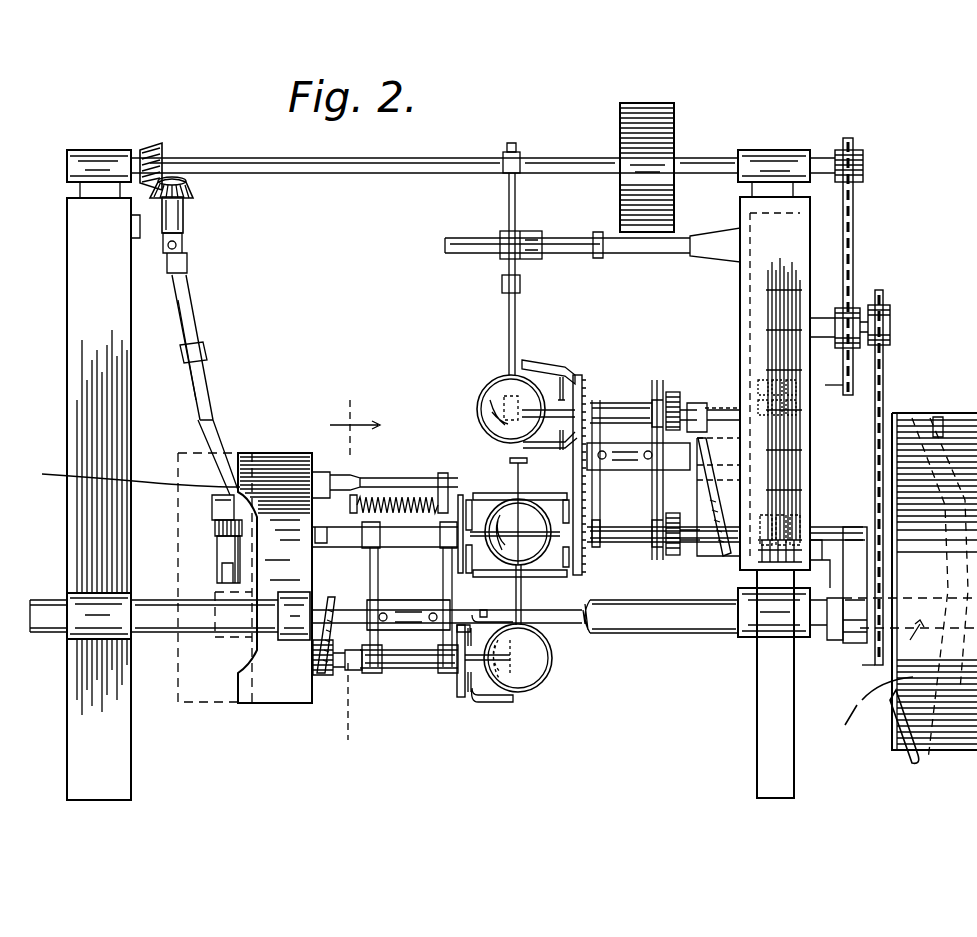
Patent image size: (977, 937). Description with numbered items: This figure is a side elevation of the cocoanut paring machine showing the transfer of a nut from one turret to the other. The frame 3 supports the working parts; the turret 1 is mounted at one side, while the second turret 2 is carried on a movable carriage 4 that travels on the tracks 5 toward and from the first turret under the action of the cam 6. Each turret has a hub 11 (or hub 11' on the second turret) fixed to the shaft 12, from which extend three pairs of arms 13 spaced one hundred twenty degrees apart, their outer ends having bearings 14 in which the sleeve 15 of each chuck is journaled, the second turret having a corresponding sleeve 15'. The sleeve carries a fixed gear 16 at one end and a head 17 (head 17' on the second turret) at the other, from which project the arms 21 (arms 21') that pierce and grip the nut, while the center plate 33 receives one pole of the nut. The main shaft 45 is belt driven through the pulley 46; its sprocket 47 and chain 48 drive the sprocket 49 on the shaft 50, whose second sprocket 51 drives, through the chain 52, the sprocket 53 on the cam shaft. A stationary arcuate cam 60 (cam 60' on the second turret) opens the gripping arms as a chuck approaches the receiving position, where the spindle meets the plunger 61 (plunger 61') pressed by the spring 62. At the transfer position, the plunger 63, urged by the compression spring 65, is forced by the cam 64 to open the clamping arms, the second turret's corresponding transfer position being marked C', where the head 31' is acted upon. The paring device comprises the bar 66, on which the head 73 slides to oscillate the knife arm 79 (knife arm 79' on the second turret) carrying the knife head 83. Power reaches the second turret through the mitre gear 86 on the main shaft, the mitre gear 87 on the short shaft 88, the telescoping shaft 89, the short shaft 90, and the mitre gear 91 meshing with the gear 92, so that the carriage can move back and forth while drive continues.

The turret 1 is at (880, 720).
The second turret 2 is at (476, 558).
The frame 3 is at (355, 570).
The carriage 4 is at (268, 453).
The tracks 5 is at (658, 633).
The cam 6 is at (940, 417).
The hub 11 is at (624, 402).
The hub 11' is at (408, 604).
The shaft 12 is at (718, 497).
The arms 13 is at (650, 502).
The bearings 14 is at (608, 400).
The sleeve 15 is at (663, 458).
The sleeve 15' is at (409, 668).
The gear 16 is at (676, 392).
The head 17 is at (584, 462).
The head 17' is at (448, 664).
The arm 21 is at (549, 409).
The arm 21' is at (512, 590).
The head 31' is at (337, 669).
The center plate 33 is at (490, 388).
The main shaft 45 is at (398, 154).
The pulley 46 is at (620, 127).
The sprocket 47 is at (856, 148).
The chain 48 is at (856, 275).
The sprocket 49 is at (826, 379).
The shaft 50 is at (822, 318).
The second sprocket 51 is at (886, 305).
The chain 52 is at (886, 397).
The sprocket 53 is at (856, 666).
The arcuate cam 60 is at (714, 511).
The arcuate cam 60' is at (326, 617).
The plunger 61 is at (526, 429).
The plunger 61' is at (394, 482).
The spring 62 is at (800, 440).
The plunger 63 is at (826, 530).
The cam 64 is at (858, 548).
The compression spring 65 is at (796, 525).
The bar 66 is at (617, 255).
The head 73 is at (528, 231).
The knife arm 79 is at (495, 259).
The knife arm 79' is at (540, 595).
The knife head 83 is at (478, 420).
The mitre gear 86 is at (158, 150).
The mitre gear 87 is at (194, 190).
The short shaft 88 is at (186, 233).
The telescoping shaft 89 is at (196, 305).
The short shaft 90 is at (212, 512).
The mitre gear 91 is at (212, 535).
The gear 92 is at (220, 566).
The position C C' is at (496, 672).